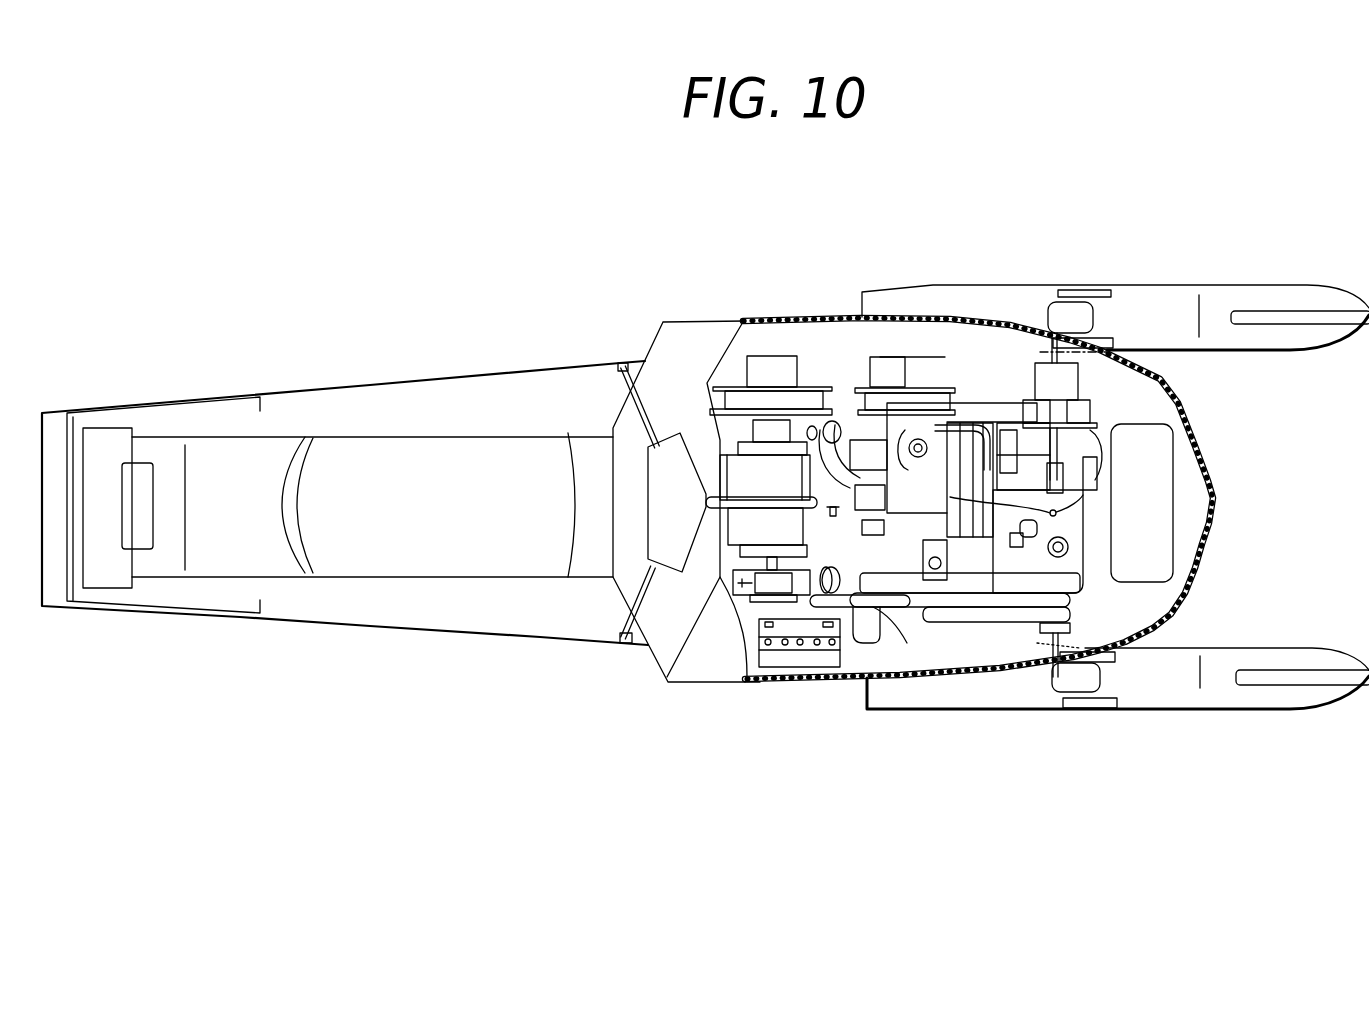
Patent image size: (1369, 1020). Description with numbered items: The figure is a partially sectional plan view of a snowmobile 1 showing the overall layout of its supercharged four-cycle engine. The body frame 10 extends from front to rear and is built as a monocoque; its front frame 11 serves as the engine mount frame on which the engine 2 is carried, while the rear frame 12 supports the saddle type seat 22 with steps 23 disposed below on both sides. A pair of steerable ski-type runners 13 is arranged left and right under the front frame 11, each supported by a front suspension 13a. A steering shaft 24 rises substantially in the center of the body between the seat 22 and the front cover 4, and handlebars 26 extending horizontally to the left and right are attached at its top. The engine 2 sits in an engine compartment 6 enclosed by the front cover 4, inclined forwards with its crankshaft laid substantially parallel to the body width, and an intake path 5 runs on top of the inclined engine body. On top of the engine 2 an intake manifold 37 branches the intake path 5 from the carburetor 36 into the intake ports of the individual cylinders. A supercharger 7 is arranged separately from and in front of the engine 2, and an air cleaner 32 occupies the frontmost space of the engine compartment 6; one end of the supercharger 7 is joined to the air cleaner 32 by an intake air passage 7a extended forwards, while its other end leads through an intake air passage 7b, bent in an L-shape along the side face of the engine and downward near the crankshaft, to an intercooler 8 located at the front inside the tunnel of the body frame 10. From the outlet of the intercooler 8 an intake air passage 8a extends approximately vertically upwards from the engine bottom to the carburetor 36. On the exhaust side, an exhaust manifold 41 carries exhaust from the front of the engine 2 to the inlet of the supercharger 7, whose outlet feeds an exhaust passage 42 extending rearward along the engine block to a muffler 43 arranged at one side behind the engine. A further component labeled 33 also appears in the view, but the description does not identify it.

The snowmobile 1 is at (615, 318).
The four-cycle engine 2 is at (1015, 634).
The front cover 4 is at (1203, 550).
The intake path 5 is at (897, 467).
The engine compartment 6 is at (1163, 590).
The supercharger 7 is at (1102, 430).
The intake air passage 7a is at (1105, 452).
The intake air passage 7b is at (997, 603).
The intercooler 8 is at (803, 616).
The intake air passage 8a is at (807, 427).
The body frame 10 is at (440, 632).
The front frame 11 is at (823, 694).
The rear frame 12 is at (280, 622).
The ski-type runners 13 is at (1258, 290).
The front suspension 13a is at (1087, 688).
The saddle type seat 22 is at (348, 568).
The steps 23 is at (483, 390).
The steering shaft 24 is at (737, 500).
The handlebars 26 is at (623, 647).
The air cleaner 32 is at (1163, 513).
The exhaust silencer 33 is at (730, 367).
The carburetor 36 is at (845, 467).
The intake manifold 37 is at (917, 438).
The exhaust manifold 41 is at (1002, 405).
The exhaust passage 42 is at (953, 627).
The muffler 43 is at (882, 633).